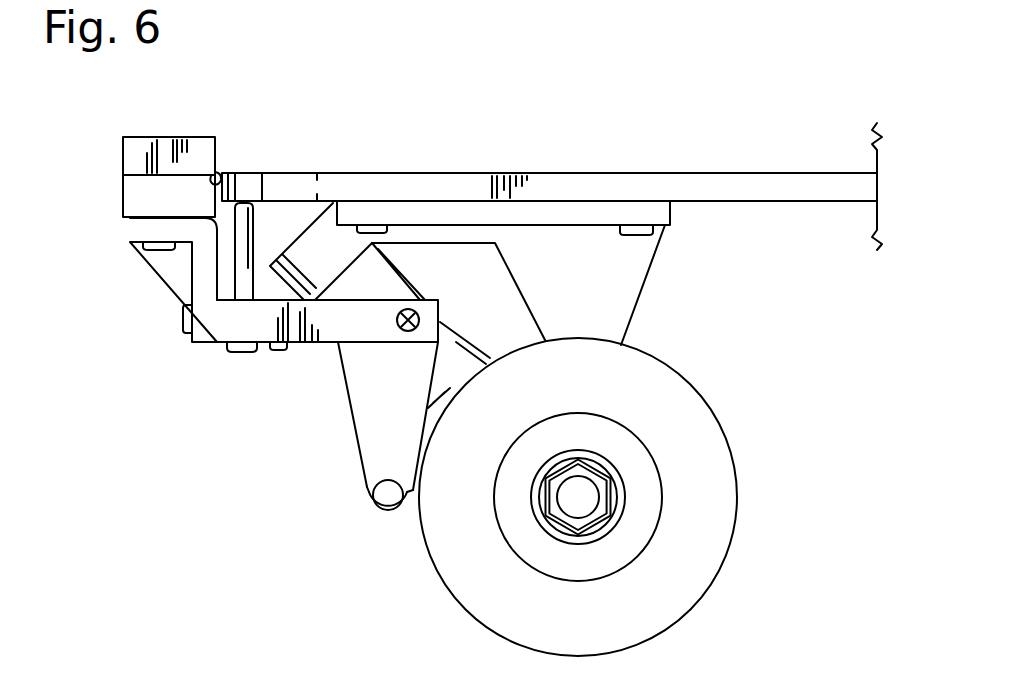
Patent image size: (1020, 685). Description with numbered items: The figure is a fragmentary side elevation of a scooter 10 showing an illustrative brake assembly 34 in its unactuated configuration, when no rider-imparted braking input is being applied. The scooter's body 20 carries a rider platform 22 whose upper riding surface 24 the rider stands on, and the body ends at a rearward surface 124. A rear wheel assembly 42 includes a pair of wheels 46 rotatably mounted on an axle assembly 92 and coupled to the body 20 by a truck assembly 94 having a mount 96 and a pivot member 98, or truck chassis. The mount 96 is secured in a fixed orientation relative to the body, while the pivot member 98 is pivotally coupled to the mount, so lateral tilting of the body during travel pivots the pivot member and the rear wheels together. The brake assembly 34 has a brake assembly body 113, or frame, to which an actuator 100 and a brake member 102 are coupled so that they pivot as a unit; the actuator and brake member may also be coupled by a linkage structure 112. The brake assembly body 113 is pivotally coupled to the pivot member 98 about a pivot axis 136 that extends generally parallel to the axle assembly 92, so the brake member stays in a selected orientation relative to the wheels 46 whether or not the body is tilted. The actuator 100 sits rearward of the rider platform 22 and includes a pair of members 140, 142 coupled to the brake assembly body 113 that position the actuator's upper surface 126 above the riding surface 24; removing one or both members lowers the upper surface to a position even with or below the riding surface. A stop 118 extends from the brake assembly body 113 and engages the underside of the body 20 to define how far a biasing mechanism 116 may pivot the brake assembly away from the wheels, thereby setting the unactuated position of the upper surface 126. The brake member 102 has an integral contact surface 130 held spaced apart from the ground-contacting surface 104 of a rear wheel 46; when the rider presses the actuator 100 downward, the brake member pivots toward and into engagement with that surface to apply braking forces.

The scooter 10 is at (805, 63).
The body 20 is at (664, 130).
The rider platform 22 is at (724, 148).
The riding surface 24 is at (812, 173).
The brake assembly 34 is at (103, 311).
The rear wheel assembly 42 is at (762, 547).
The wheels 46 is at (754, 481).
The axle assembly 92 is at (583, 497).
The truck assembly 94 is at (705, 282).
The mount 96 is at (664, 240).
The pivot member 98 is at (417, 291).
The actuator 100 is at (118, 146).
The brake member 102 is at (370, 491).
The ground-contacting surface 104 is at (408, 497).
The linkage structure 112 is at (192, 276).
The brake assembly body 113 is at (185, 360).
The biasing mechanism 116 is at (318, 399).
The stop 118 is at (259, 214).
The rearward surface 124 is at (217, 177).
The upper surface 126 is at (165, 137).
The contact surface 130 is at (413, 510).
The pivot axis 136 is at (422, 318).
The member 140 is at (123, 152).
The member 142 is at (123, 200).